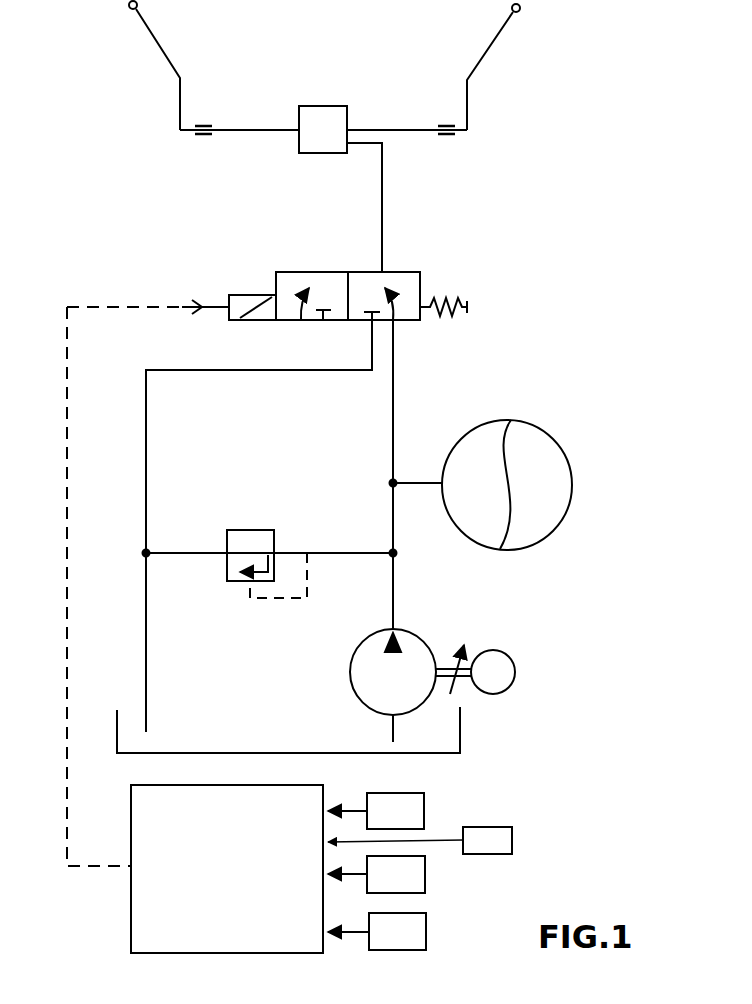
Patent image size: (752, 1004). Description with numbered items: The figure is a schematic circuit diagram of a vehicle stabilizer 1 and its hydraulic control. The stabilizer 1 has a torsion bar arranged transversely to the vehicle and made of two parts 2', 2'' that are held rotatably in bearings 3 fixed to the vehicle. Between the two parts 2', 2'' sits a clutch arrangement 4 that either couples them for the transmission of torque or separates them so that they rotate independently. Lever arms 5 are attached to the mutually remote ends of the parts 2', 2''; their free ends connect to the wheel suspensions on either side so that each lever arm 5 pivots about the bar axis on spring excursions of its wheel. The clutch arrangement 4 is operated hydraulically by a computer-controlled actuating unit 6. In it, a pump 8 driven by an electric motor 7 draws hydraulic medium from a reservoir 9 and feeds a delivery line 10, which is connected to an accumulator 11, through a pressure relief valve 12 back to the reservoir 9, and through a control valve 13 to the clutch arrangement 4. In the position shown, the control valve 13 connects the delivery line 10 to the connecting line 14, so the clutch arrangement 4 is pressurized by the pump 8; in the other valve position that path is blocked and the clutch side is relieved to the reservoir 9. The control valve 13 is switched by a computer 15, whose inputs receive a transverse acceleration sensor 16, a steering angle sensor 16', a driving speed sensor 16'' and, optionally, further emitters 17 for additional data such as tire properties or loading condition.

The stabilizer 1 is at (496, 93).
The torsion bar part 2' is at (239, 110).
The torsion bar part 2'' is at (407, 110).
The bearings 3 is at (204, 136).
The clutch arrangement 4 is at (332, 142).
The lever arms 5 is at (166, 53).
The actuating unit 6 is at (512, 589).
The electric motor 7 is at (514, 678).
The pump 8 is at (360, 684).
The reservoir 9 is at (431, 755).
The delivery line 10 is at (394, 538).
The accumulator 11 is at (490, 428).
The pressure relief valve 12 is at (250, 540).
The control valve 13 is at (292, 272).
The connecting line 14 is at (383, 226).
The computer 15 is at (264, 935).
The sensor 16 is at (420, 840).
The sensor 16' is at (376, 811).
The sensor 16'' is at (376, 874).
The emitters 17 is at (407, 946).